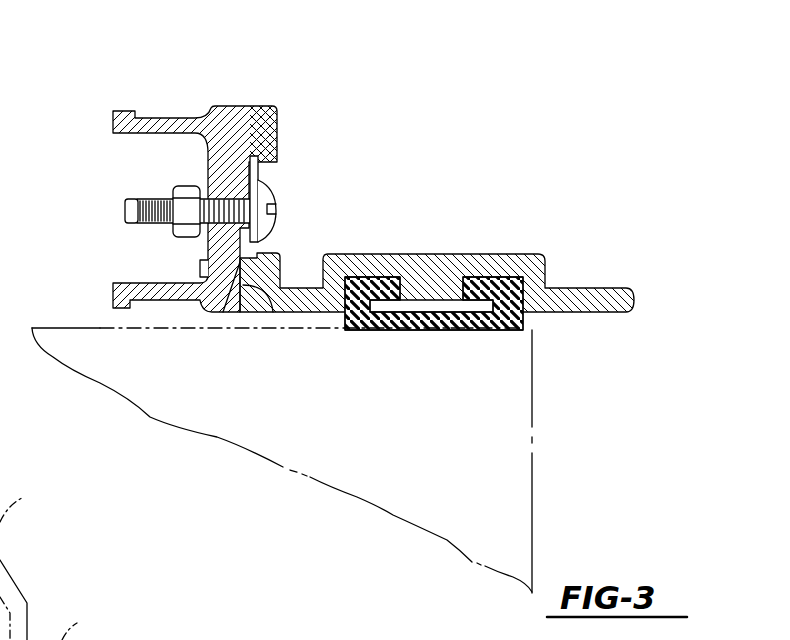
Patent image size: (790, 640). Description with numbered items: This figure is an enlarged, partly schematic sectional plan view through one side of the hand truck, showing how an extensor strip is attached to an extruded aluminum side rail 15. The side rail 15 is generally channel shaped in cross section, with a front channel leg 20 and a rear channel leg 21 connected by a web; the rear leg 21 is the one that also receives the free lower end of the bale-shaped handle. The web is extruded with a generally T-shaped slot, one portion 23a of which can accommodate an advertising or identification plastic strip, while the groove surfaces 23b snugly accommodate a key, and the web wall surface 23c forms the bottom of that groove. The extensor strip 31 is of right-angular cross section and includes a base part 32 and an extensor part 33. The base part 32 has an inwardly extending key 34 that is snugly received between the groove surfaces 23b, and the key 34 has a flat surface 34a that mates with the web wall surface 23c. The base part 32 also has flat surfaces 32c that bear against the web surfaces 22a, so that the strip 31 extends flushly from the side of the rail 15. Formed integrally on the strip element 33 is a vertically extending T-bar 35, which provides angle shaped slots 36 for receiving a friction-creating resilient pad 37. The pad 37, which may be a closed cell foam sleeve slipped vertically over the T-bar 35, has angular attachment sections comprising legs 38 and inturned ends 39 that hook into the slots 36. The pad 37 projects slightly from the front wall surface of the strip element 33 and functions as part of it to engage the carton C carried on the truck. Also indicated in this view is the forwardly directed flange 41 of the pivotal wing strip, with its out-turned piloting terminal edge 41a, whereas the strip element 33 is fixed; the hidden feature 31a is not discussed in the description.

The side rail 15 is at (226, 103).
The front channel leg 20 is at (152, 307).
The rear channel leg 21 is at (157, 112).
The web surface 22a is at (232, 312).
The slot portion 23a is at (200, 128).
The groove surfaces 23b is at (232, 150).
The web wall surface 23c is at (203, 153).
The extensor strip 31 is at (340, 238).
The serrated plate 31a is at (270, 200).
The base part 32 is at (258, 254).
The flat surfaces 32c is at (273, 313).
The extensor part 33 is at (437, 287).
The key 34 is at (257, 180).
The flat surface 34a is at (205, 260).
The T-bar 35 is at (475, 272).
The angle shaped slots 36 is at (365, 277).
The resilient pad 37 is at (417, 342).
The legs 38 is at (550, 292).
The inturned ends 39 is at (506, 268).
The flange 41 is at (77, 623).
The piloting terminal edge 41a is at (22, 498).
The carton C is at (385, 520).